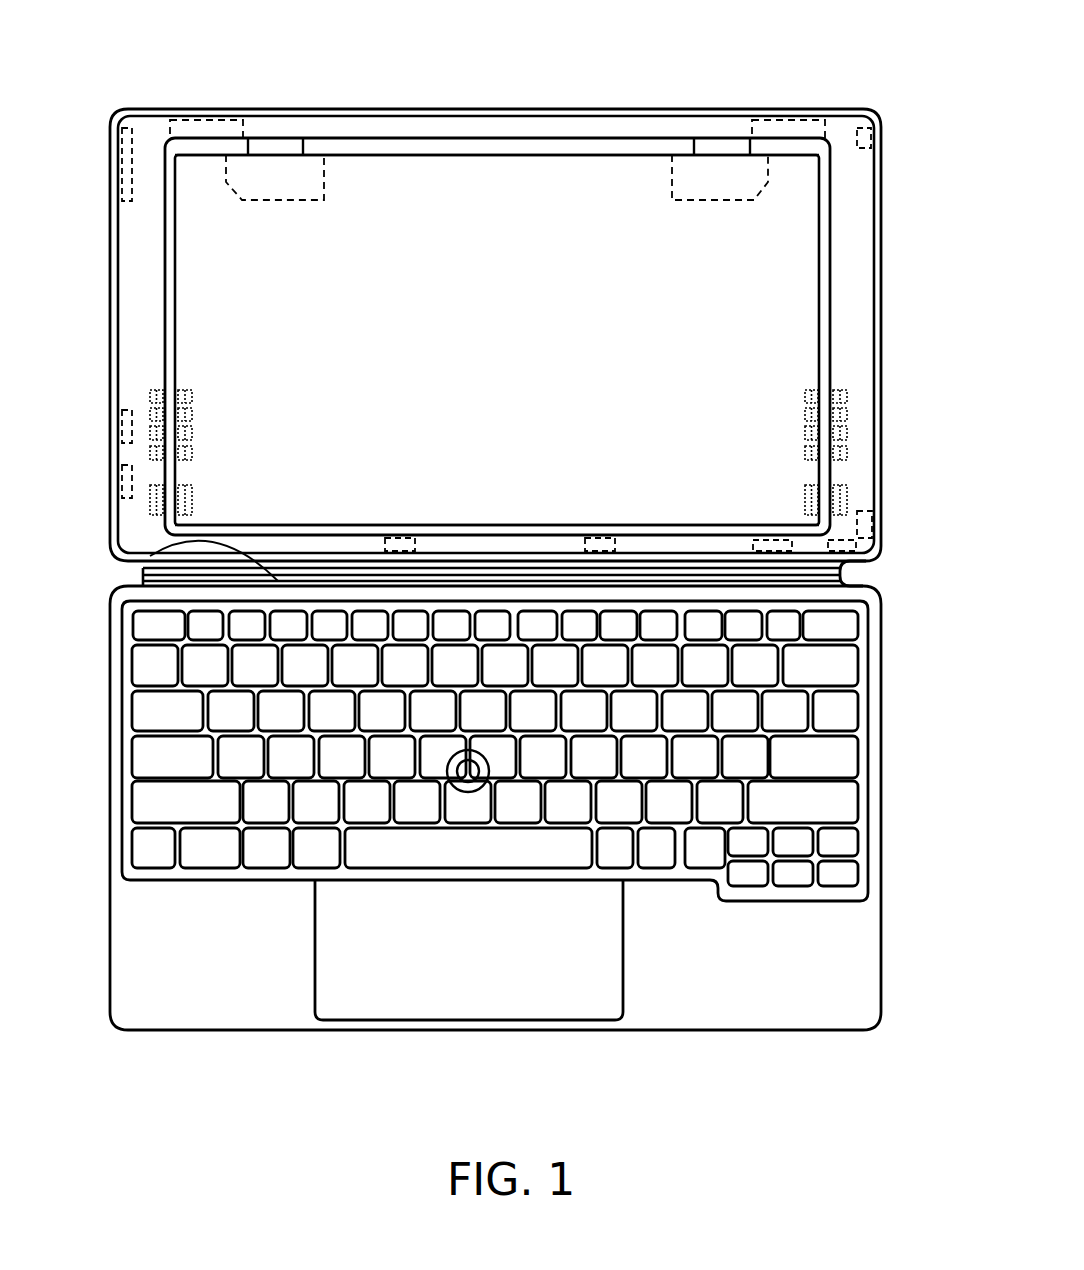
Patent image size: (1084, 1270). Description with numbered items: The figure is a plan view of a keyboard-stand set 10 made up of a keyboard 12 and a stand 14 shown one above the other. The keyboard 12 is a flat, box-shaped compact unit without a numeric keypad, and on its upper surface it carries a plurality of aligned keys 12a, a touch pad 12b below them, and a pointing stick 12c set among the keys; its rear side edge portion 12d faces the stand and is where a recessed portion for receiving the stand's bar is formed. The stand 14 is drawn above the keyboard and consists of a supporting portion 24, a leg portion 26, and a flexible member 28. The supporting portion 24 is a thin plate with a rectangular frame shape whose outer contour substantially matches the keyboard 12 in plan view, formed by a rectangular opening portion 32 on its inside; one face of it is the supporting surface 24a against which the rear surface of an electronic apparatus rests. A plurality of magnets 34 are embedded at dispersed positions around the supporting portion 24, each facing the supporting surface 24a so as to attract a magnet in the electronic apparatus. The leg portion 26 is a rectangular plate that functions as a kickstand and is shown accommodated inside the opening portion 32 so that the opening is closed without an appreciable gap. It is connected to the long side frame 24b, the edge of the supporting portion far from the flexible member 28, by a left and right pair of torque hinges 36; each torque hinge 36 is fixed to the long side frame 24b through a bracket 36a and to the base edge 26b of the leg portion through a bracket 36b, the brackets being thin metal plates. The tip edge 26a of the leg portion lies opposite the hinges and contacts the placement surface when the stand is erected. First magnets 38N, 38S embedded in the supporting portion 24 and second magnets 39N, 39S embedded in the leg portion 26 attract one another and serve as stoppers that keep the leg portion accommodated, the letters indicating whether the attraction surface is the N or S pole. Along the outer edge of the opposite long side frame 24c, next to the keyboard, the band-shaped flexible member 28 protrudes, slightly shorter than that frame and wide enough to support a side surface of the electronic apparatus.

The keyboard-stand set 10 is at (132, 29).
The keyboard 12 is at (893, 712).
The keys 12a is at (188, 760).
The touch pad 12b is at (543, 983).
The pointing stick 12c is at (468, 778).
The rear side edge portion 12d is at (145, 563).
The stand 14 is at (893, 433).
The supporting portion 24 is at (624, 116).
The supporting surface 24a is at (860, 229).
The long side frame 24b is at (570, 132).
The long side frame 24c is at (325, 550).
The leg portion 26 is at (504, 173).
The tip edge 26a is at (640, 538).
The base edge 26b is at (388, 157).
The flexible member 28 is at (505, 555).
The opening portion 32 is at (458, 150).
The magnets 34 is at (122, 140).
The torque hinge 36 is at (286, 138).
The bracket 36a is at (203, 110).
The bracket 36b is at (298, 203).
The first magnet 38N is at (192, 398).
The first magnet 38S is at (192, 455).
The second magnet 39N is at (192, 435).
The second magnet 39S is at (192, 416).